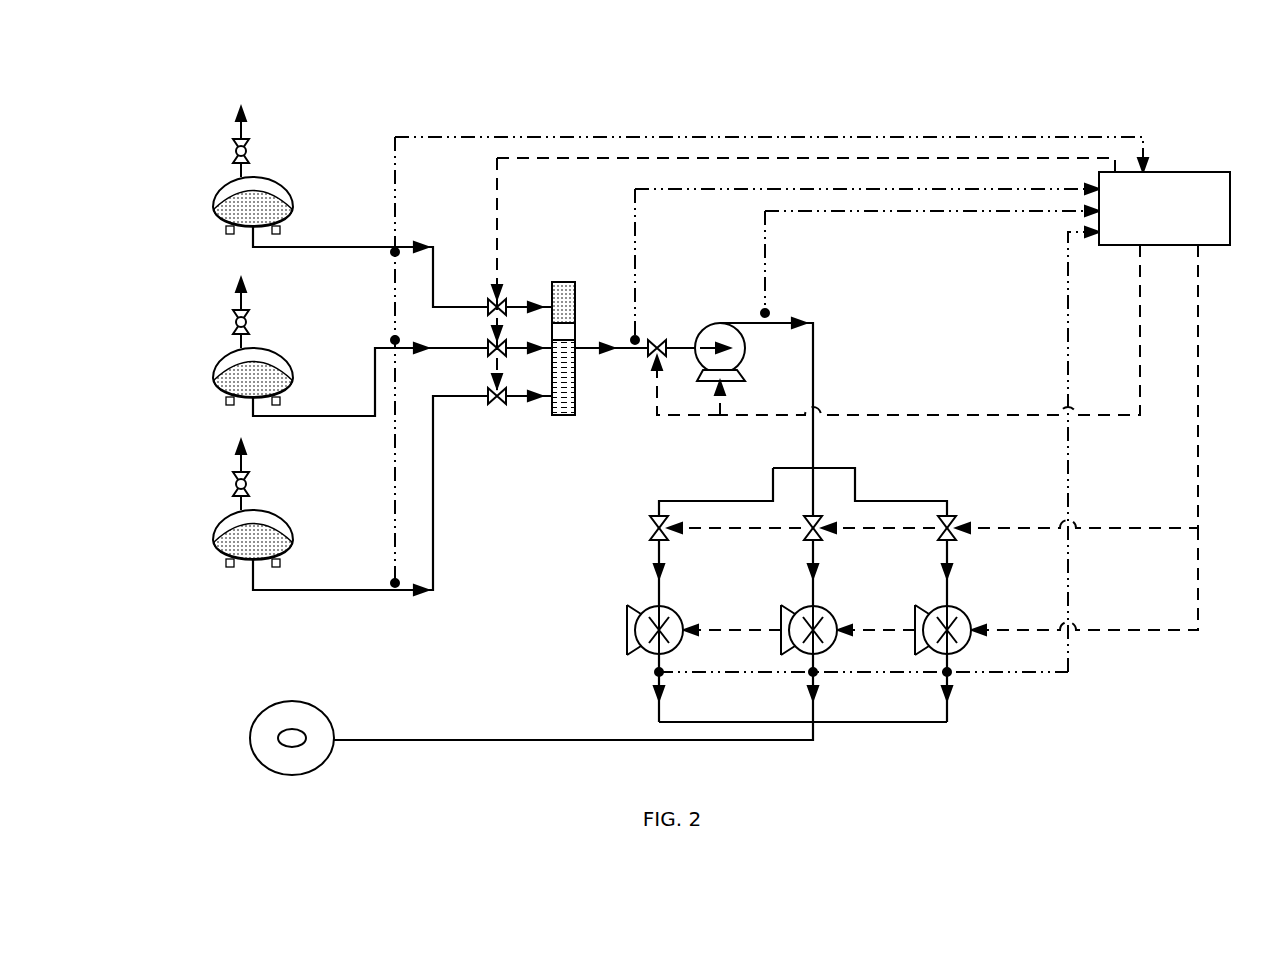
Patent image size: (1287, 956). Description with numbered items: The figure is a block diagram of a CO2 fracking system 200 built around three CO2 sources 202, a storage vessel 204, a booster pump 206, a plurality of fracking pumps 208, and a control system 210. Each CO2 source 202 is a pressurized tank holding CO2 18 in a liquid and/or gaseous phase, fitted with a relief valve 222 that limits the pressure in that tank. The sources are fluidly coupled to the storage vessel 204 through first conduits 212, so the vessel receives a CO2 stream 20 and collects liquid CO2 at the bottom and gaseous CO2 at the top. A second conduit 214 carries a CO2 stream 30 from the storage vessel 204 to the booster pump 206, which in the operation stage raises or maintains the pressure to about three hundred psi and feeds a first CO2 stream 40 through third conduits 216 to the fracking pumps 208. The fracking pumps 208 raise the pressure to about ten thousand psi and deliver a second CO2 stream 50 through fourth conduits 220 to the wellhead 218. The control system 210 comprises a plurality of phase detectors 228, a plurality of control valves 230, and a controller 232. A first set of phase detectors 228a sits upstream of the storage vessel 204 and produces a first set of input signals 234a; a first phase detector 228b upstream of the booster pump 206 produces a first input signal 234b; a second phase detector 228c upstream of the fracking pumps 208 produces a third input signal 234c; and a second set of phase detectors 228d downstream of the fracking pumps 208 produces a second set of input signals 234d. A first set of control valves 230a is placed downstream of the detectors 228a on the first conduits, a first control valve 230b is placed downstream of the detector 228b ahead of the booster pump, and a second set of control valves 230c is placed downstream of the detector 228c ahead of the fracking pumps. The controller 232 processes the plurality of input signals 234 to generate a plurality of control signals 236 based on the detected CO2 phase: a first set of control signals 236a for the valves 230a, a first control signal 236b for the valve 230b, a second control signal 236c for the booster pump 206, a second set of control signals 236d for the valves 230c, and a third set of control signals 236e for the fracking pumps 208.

The CO2 fracking system 200 is at (318, 82).
The CO2 18 is at (215, 218).
The CO2 stream 20 is at (430, 243).
The CO2 stream 30 is at (600, 352).
The first CO2 stream 40 is at (805, 328).
The second CO2 stream 50 is at (654, 694).
The CO2 source 202 is at (286, 175).
The storage vessel 204 is at (565, 282).
The booster pump 206 is at (720, 323).
The fracking pump 208 is at (640, 604).
The control system 210 is at (1195, 150).
The first conduit 212 is at (332, 243).
The second conduit 214 is at (596, 346).
The third conduit 216 is at (818, 445).
The wellhead 218 is at (294, 700).
The fourth conduit 220 is at (656, 722).
The relief valve 222 is at (232, 150).
The phase detector 228 is at (412, 255).
The first set of phase detectors 228a is at (390, 255).
The first phase detector 228b is at (638, 300).
The second phase detector 228c is at (770, 310).
The second set of phase detectors 228d is at (665, 676).
The control valve 230 is at (510, 290).
The first set of control valves 230a is at (488, 310).
The first control valve 230b is at (660, 338).
The second set of control valves 230c is at (952, 515).
The controller 232 is at (1147, 236).
The input signals 234 is at (935, 222).
The first set of input signals 234a is at (500, 137).
The first input signal 234b is at (630, 189).
The third input signal 234c is at (768, 230).
The second set of input signals 234d is at (1065, 268).
The control signals 236 is at (1132, 298).
The first set of control signals 236a is at (1118, 160).
The first control signal 236b is at (652, 412).
The second control signal 236c is at (726, 415).
The second set of control signals 236d is at (1134, 526).
The third set of control signals 236e is at (1134, 628).